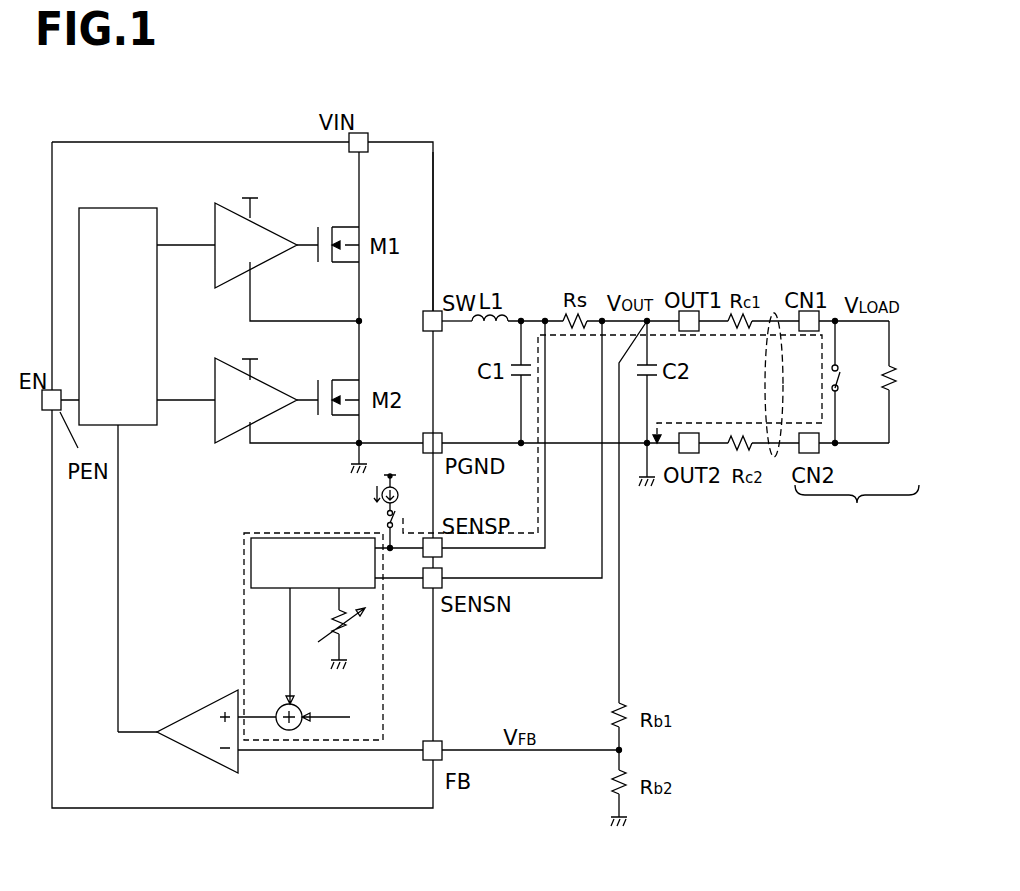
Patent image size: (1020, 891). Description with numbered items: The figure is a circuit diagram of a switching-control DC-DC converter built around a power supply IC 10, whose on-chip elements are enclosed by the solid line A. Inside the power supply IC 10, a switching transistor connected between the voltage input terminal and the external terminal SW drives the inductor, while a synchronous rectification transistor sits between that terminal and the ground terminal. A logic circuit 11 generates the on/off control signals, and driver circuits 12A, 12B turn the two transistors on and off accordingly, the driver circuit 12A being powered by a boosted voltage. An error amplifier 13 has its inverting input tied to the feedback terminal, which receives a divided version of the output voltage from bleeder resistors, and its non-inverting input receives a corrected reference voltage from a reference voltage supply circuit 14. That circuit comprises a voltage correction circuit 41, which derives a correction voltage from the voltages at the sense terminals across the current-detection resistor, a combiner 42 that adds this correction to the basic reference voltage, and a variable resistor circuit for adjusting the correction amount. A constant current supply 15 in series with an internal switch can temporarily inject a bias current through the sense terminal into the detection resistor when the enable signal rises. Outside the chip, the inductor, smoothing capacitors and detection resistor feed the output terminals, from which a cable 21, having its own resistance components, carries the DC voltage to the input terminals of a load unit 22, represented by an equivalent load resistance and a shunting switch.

The power supply IC 10 is at (208, 142).
The logic circuit 11 is at (105, 207).
The driver circuit 12A is at (215, 225).
The driver circuit 12B is at (213, 375).
The error amplifier 13 is at (193, 710).
The reference voltage supply circuit 14 is at (305, 639).
The constant current supply 15 is at (398, 494).
The cable 21 is at (774, 457).
The load unit 22 is at (863, 429).
The voltage correction circuit 41 is at (250, 565).
The combiner 42 is at (302, 703).
The solid line A is at (435, 232).